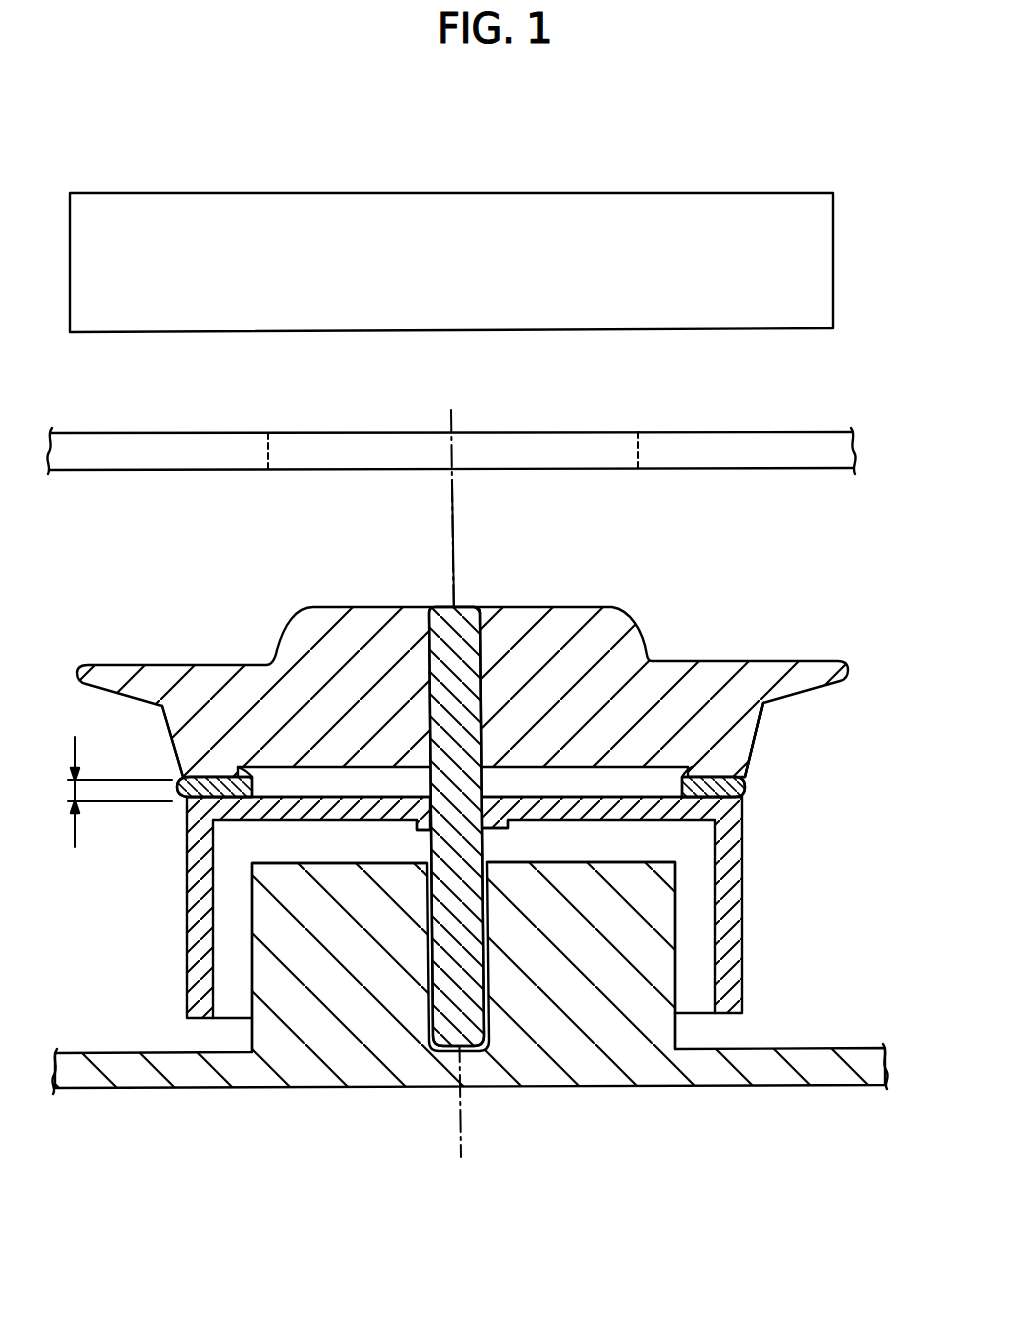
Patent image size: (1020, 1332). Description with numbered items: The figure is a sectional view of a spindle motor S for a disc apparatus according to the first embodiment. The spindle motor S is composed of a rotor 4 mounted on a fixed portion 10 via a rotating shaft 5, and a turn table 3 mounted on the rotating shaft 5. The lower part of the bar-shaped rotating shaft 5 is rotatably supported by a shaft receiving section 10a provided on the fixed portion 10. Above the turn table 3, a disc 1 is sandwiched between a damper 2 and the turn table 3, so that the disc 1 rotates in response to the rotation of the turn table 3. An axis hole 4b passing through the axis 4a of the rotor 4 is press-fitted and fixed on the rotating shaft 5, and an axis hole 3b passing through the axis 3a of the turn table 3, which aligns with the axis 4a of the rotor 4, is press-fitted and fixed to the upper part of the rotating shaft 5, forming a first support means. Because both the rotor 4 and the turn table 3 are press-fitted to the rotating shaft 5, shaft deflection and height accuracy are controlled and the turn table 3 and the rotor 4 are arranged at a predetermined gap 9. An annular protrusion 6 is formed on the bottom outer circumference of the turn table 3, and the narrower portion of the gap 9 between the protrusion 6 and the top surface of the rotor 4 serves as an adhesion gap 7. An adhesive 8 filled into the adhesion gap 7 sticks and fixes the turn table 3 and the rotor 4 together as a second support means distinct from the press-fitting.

The disc 1 is at (780, 438).
The damper 2 is at (488, 206).
The turn table 3 is at (616, 618).
The axis of the turn table 3a is at (451, 554).
The axis hole of the turn table 3b is at (480, 643).
The rotor 4 is at (735, 868).
The axis of the rotor 4a is at (453, 480).
The axis hole of the rotor 4b is at (507, 821).
The rotating shaft 5 is at (437, 667).
The annular protrusion 6 is at (730, 750).
The adhesion gap 7 is at (68, 788).
The adhesive 8 is at (183, 820).
The gap 9 is at (743, 785).
The fixed portion 10 is at (722, 1093).
The shaft receiving section 10a is at (322, 1030).
The spindle motor S is at (783, 729).